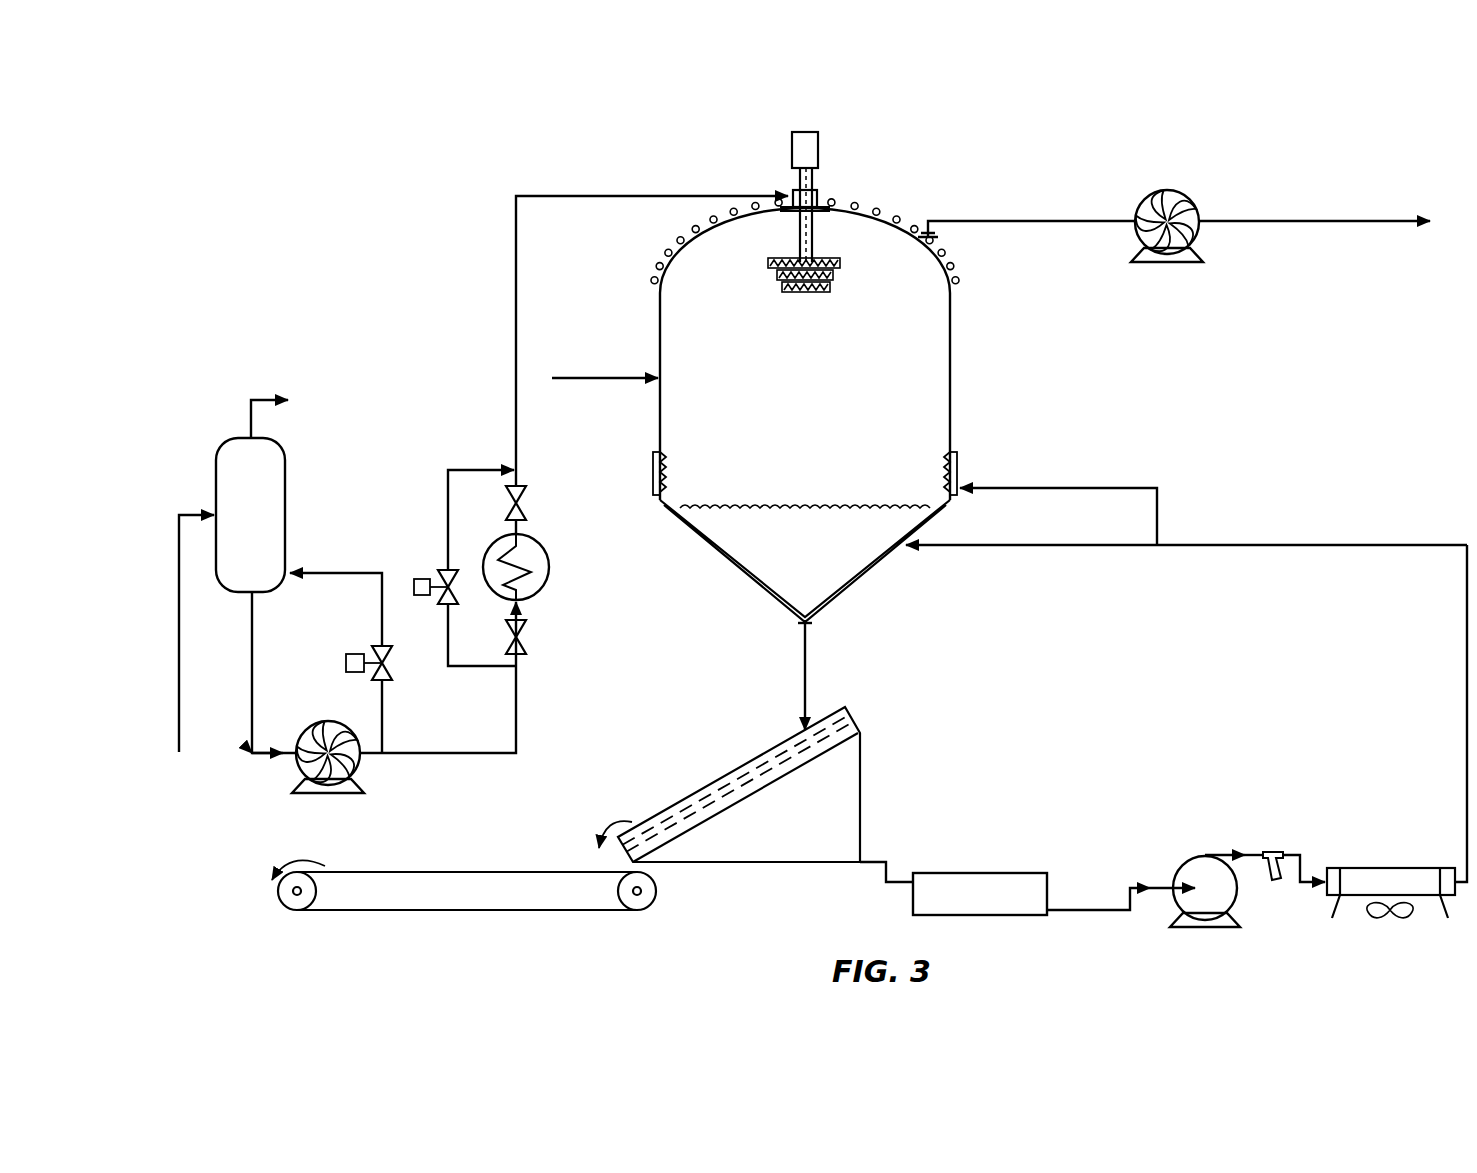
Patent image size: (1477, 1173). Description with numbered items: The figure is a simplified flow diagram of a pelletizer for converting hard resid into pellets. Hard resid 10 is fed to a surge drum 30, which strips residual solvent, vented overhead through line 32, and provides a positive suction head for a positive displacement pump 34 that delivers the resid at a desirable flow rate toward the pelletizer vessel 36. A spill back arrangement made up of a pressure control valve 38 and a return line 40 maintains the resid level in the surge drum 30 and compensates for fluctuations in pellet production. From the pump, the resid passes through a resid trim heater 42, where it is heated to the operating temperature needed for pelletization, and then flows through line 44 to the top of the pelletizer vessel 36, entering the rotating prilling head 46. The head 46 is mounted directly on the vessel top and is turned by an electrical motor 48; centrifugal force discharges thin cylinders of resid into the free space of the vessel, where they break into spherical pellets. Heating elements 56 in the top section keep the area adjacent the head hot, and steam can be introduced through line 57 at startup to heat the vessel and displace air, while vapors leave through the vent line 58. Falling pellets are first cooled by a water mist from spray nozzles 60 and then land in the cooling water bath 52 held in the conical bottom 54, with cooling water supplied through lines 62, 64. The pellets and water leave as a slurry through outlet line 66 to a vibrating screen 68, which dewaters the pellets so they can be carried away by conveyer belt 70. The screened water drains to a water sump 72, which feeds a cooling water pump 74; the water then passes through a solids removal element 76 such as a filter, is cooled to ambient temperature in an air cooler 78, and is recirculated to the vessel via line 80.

The hard resid 10 is at (178, 668).
The surge drum 30 is at (286, 512).
The line 32 is at (250, 420).
The positive displacement pump 34 is at (325, 723).
The pelletizer vessel 36 is at (952, 378).
The pressure control valve 38 is at (395, 672).
The return line 40 is at (335, 573).
The resid trim heater 42 is at (545, 550).
The line 44 is at (518, 300).
The rotating prilling head 46 is at (775, 282).
The electrical motor 48 is at (790, 150).
The cooling water bath 52 is at (805, 540).
The conical bottom 54 is at (725, 580).
The heating elements 56 is at (688, 242).
The line 57 is at (556, 378).
The vent line 58 is at (1028, 221).
The spray nozzles 60 is at (650, 472).
The line 62 is at (1060, 488).
The line 64 is at (1060, 545).
The outlet line 66 is at (815, 665).
The vibrating screen 68 is at (713, 782).
The conveyer belt 70 is at (445, 873).
The water sump 72 is at (975, 872).
The cooling water pump 74 is at (1208, 857).
The solids removal element 76 is at (1280, 852).
The air cooler 78 is at (1358, 867).
The line 80 is at (1467, 697).